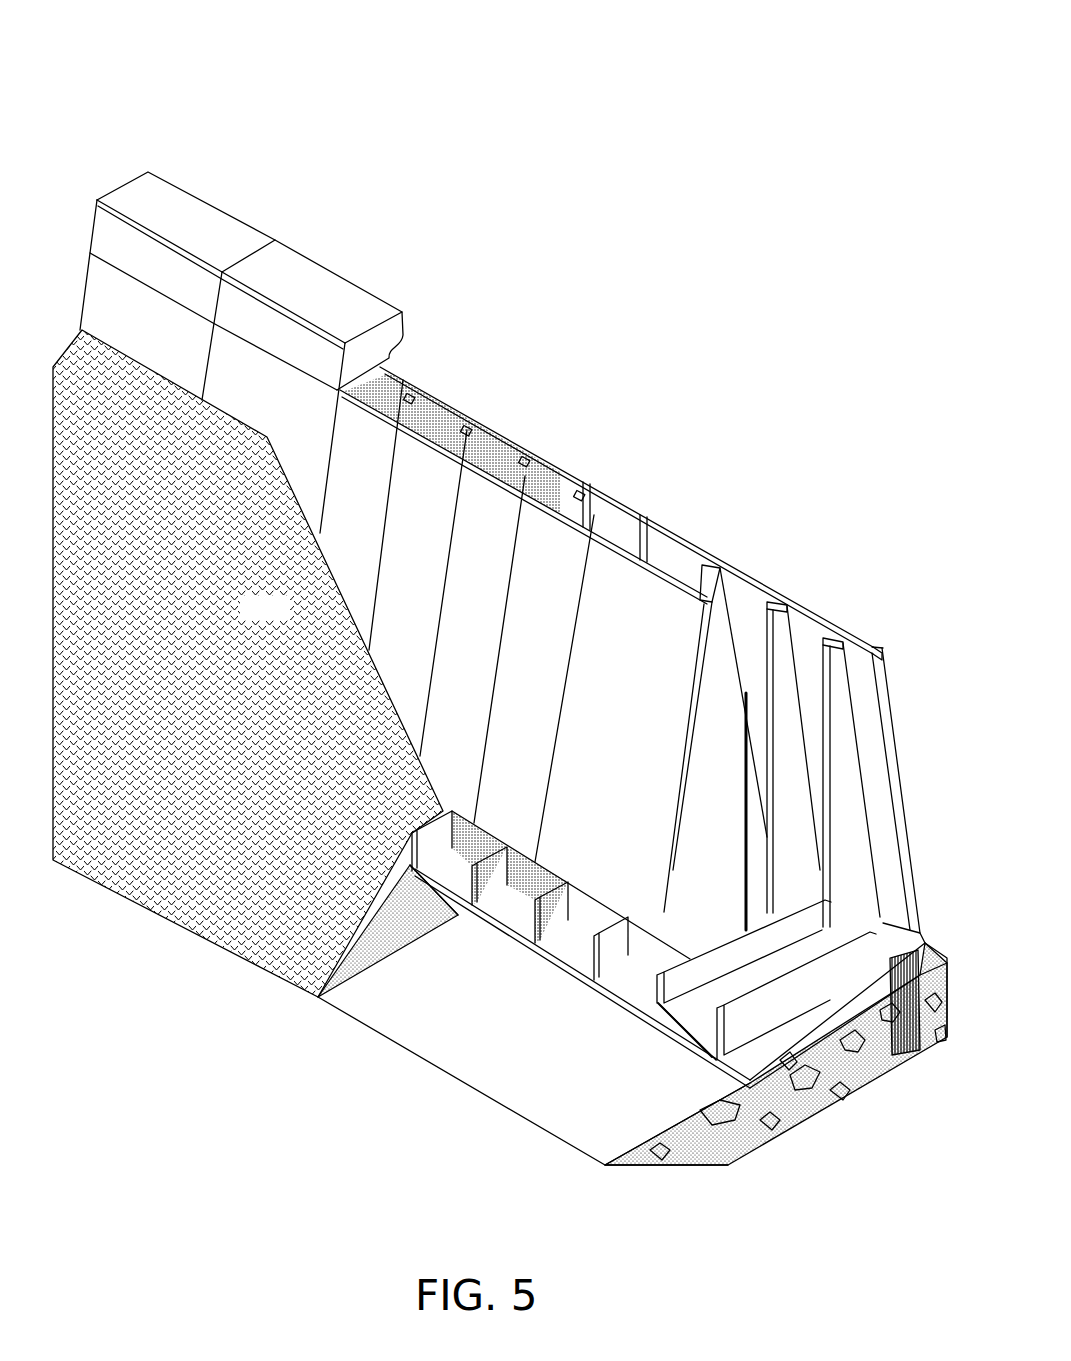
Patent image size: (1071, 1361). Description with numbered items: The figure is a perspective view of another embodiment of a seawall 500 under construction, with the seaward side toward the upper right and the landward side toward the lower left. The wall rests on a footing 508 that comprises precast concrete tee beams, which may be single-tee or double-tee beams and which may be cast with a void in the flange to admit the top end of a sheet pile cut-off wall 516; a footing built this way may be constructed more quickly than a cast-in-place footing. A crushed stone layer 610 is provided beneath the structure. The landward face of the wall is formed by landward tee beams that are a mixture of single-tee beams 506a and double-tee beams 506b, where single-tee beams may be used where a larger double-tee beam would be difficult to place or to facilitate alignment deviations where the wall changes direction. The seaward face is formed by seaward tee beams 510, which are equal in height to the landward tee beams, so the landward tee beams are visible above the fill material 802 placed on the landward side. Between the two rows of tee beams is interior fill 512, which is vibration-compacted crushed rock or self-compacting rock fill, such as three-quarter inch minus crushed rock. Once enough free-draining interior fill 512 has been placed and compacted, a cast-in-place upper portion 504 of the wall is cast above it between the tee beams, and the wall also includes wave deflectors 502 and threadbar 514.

The seawall 500 is at (124, 40).
The wave deflectors 502 is at (165, 191).
The cast-in-place upper portion 504 is at (557, 493).
The single-tee beams 506a is at (385, 498).
The double-tee beams 506b is at (655, 678).
The footing 508 is at (650, 1018).
The seaward tee beams 510 is at (520, 445).
The interior fill 512 is at (507, 933).
The threadbar 514 is at (747, 757).
The sheet pile cut-off wall 516 is at (910, 1060).
The crushed stone layer 610 is at (718, 1160).
The fill material 802 is at (287, 618).